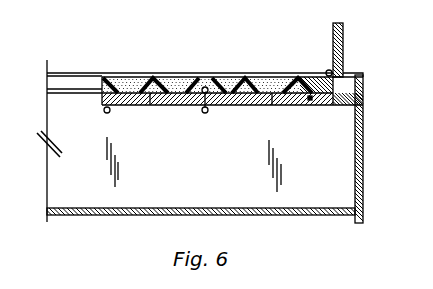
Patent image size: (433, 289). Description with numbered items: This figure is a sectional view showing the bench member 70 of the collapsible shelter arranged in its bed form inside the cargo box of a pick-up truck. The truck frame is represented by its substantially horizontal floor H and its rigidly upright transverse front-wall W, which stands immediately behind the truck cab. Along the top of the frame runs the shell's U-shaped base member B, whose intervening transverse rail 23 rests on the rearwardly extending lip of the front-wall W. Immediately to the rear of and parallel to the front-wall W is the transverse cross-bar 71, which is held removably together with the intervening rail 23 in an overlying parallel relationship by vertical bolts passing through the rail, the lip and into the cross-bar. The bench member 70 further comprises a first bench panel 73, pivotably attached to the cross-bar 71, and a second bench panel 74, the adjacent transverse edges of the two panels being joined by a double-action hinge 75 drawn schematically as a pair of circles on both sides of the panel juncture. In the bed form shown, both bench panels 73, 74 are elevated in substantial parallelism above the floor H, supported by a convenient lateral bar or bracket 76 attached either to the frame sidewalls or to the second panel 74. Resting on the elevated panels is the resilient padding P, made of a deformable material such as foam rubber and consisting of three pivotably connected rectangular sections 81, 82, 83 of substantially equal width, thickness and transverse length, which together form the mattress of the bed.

The base member B is at (100, 72).
The floor H is at (192, 208).
The front-wall W is at (364, 142).
The padding P is at (262, 77).
The intervening transverse rail 23 is at (364, 85).
The bench member 70 is at (188, 112).
The cross-bar 71 is at (337, 106).
The first bench panel 73 is at (272, 106).
The second bench panel 74 is at (150, 106).
The double-action hinge 75 is at (205, 113).
The lateral bar or bracket 76 is at (103, 111).
The first padding section 81 is at (156, 77).
The second padding section 82 is at (204, 86).
The third padding section 83 is at (300, 72).